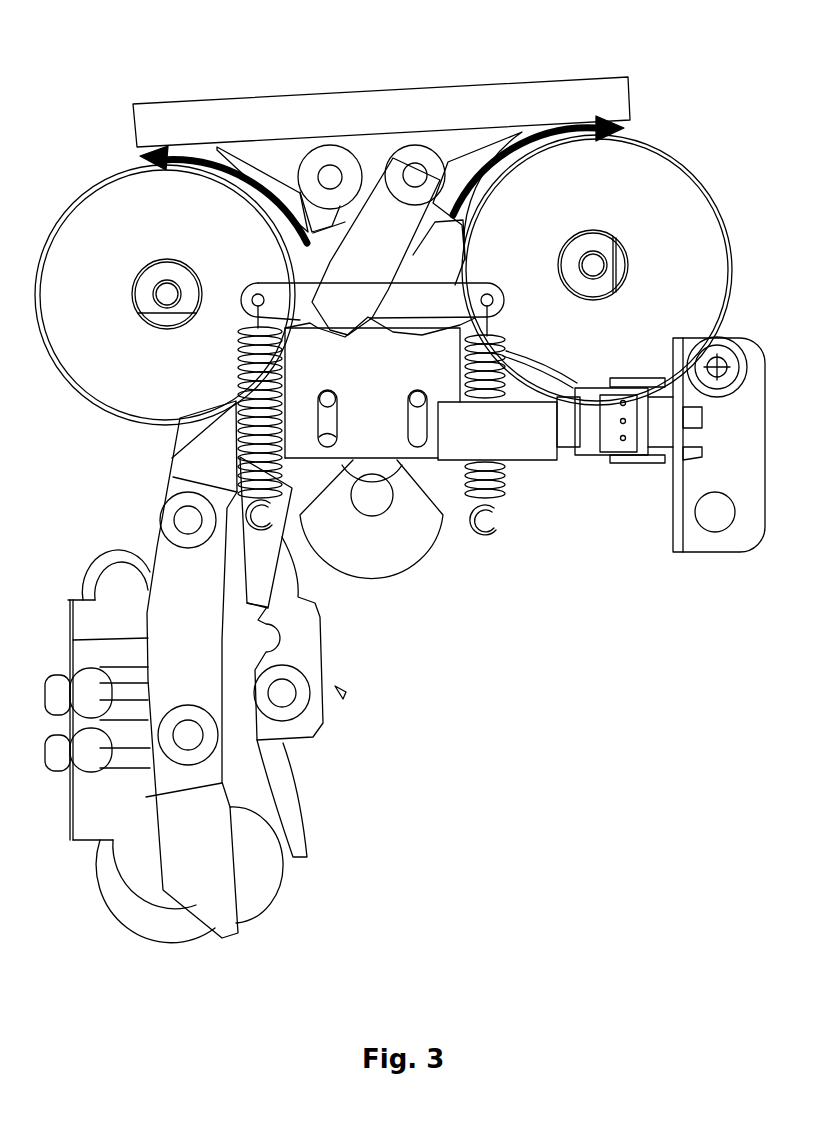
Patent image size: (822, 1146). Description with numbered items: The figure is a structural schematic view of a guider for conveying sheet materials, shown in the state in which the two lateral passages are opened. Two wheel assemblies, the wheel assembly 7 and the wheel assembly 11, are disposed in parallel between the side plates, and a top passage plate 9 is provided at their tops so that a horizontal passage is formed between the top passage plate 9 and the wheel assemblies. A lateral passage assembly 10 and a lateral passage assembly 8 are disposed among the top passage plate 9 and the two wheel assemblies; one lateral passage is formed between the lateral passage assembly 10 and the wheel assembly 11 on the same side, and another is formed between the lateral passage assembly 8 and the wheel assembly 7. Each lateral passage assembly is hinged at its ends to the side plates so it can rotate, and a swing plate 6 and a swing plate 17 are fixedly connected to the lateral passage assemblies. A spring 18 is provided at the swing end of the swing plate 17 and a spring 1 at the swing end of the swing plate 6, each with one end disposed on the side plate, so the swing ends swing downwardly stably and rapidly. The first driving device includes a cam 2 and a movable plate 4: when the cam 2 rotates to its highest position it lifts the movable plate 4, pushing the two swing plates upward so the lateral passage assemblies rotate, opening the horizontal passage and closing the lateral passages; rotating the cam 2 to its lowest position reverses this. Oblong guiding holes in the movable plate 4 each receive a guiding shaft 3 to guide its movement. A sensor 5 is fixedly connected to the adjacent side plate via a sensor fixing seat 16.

The spring 1 is at (505, 515).
The cam 2 is at (363, 547).
The guiding shaft 3 is at (417, 398).
The movable plate 4 is at (384, 441).
The sensor 5 is at (593, 425).
The swing plate 6 is at (330, 212).
The wheel assembly 7 is at (523, 185).
The lateral passage assembly 8 is at (458, 157).
The top passage plate 9 is at (210, 126).
The lateral passage assembly 10 is at (262, 168).
The wheel assembly 11 is at (97, 228).
The sensor fixing seat 16 is at (695, 477).
The swing plate 17 is at (365, 248).
The spring 18 is at (268, 493).